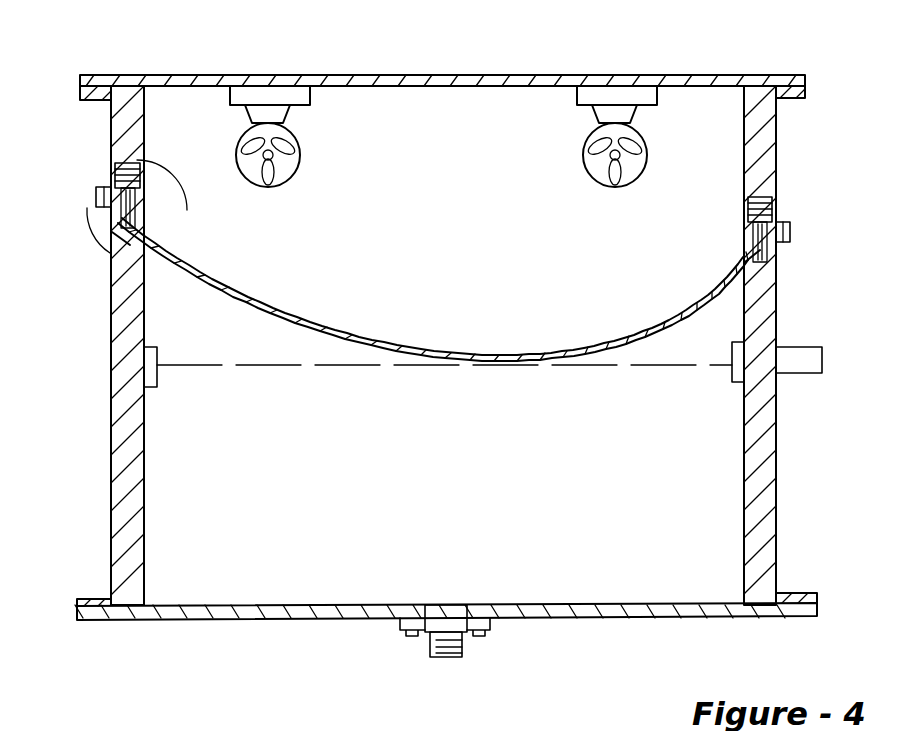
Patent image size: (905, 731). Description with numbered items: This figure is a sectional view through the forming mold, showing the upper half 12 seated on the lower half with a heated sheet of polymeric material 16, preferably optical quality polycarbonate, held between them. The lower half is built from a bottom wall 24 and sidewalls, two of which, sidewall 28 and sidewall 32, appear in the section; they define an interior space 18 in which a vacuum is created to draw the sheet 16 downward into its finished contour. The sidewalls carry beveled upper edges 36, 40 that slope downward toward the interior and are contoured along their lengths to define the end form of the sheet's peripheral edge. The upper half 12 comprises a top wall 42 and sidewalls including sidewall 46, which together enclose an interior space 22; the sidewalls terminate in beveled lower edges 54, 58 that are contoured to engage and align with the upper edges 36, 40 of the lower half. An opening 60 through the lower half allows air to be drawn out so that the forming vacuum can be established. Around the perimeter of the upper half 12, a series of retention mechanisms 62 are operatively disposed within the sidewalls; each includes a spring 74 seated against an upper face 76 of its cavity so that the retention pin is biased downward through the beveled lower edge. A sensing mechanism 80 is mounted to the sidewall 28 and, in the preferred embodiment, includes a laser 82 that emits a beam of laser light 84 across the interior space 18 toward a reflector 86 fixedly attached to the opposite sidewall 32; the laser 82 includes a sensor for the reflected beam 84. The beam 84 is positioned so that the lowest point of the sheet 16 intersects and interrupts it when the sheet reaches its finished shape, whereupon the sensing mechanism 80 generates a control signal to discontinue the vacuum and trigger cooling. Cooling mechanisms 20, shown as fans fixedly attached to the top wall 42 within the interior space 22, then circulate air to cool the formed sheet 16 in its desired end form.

The upper half 12 is at (441, 342).
The sheet of polymeric material 16 is at (432, 347).
The interior space 18 is at (591, 578).
The cooling mechanisms 20 is at (300, 152).
The interior space 22 is at (462, 118).
The bottom wall 24 is at (305, 620).
The sidewall 28 is at (777, 430).
The sidewall 32 is at (110, 372).
The upper edge 36 is at (777, 266).
The upper edge 40 is at (115, 245).
The top wall 42 is at (366, 75).
The sidewall 46 is at (777, 140).
The lower edge 54 is at (745, 268).
The lower edge 58 is at (170, 230).
The opening 60 is at (445, 606).
The retention mechanisms 62 is at (110, 176).
The spring 74 is at (190, 721).
The upper face 76 is at (261, 724).
The sensing mechanism 80 is at (805, 347).
The laser 82 is at (800, 368).
The beam of laser light 84 is at (330, 368).
The reflector 86 is at (150, 375).